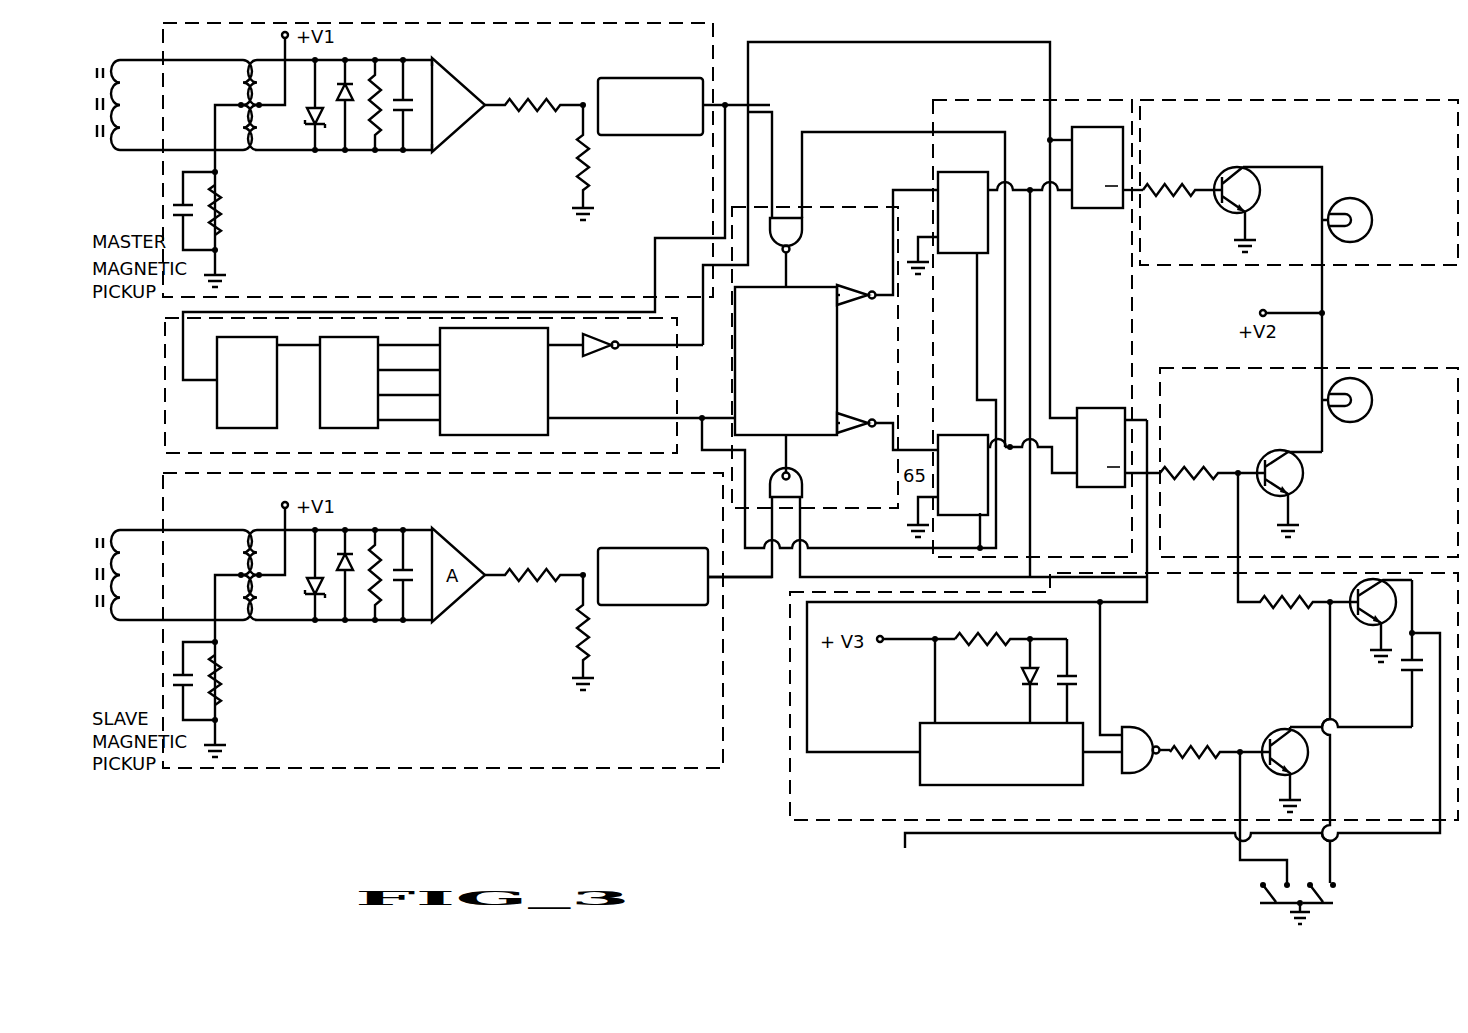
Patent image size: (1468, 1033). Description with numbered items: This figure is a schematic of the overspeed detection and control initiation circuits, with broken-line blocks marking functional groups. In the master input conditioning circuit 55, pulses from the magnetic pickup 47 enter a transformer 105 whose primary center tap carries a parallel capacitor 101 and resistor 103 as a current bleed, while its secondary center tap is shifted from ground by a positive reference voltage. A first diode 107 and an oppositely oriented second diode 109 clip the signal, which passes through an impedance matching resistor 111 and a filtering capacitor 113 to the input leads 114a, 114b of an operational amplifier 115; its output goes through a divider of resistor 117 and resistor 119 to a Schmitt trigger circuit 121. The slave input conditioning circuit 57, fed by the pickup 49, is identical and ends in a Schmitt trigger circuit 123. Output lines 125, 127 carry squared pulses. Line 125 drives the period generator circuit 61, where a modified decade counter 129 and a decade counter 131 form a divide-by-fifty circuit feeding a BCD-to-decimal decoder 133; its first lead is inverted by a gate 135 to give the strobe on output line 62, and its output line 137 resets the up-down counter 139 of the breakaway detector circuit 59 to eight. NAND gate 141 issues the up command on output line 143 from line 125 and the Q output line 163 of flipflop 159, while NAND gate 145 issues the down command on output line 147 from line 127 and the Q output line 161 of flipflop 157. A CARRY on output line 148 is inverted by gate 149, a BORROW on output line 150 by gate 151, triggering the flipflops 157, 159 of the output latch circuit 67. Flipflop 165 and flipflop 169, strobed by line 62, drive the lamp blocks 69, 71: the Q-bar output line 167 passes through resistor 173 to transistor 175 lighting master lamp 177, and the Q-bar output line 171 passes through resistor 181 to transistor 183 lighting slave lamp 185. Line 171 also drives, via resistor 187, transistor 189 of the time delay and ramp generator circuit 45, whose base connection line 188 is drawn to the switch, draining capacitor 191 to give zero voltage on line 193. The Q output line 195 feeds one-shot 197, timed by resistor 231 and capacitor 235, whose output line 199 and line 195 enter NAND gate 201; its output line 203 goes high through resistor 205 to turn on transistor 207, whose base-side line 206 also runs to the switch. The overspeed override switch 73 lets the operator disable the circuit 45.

The time delay and ramp generator circuit 45 is at (790, 822).
The magnetic pickup 47 is at (118, 60).
The magnetic pickup 49 is at (116, 562).
The input conditioning circuit 55 is at (713, 32).
The input conditioning circuit 57 is at (683, 782).
The breakaway detector circuit 59 is at (848, 207).
The period generator circuit 61 is at (165, 362).
The output line 62 is at (665, 344).
The output latch circuit 67 is at (1068, 100).
The master vehicle overspeed light and drive means 69 is at (1322, 100).
The slave vehicle overspeed light and drive means 71 is at (1390, 367).
The overspeed override switch 73 is at (1334, 905).
The capacitor 101 is at (174, 206).
The resistor 103 is at (226, 202).
The transformer 105 is at (246, 60).
The first diode 107 is at (312, 124).
The second diode 109 is at (350, 104).
The impedance matching resistor 111 is at (378, 86).
The filtering capacitor 113 is at (402, 126).
The input lead 114a is at (432, 64).
The input lead 114b is at (433, 150).
The operational amplifier 115 is at (456, 84).
The resistor 117 is at (528, 104).
The resistor 119 is at (575, 166).
The Schmitt trigger circuit 121 is at (678, 78).
The Schmitt trigger circuit 123 is at (653, 560).
The output line 125 is at (770, 105).
The output line 127 is at (742, 595).
The modified decade counter 129 is at (217, 418).
The decade counter 131 is at (320, 422).
The BCD-to-decimal decoder 133 is at (440, 432).
The gate 135 is at (625, 359).
The output line 137 is at (604, 418).
The up-down counter 139 is at (837, 353).
The NAND gate 141 is at (804, 219).
The output line 143 is at (788, 262).
The NAND gate 145 is at (806, 488).
The output line 147 is at (790, 467).
The output line 148 is at (844, 290).
The gate 149 is at (852, 310).
The output line 150 is at (825, 442).
The gate 151 is at (856, 420).
The information storage flipflop 157 is at (968, 162).
The information storage flipflop 159 is at (963, 426).
The Q output line 161 is at (1021, 185).
The Q output line 163 is at (916, 188).
The flipflop 165 is at (1108, 210).
The Q-bar output line 167 is at (1142, 193).
The flipflop 169 is at (1094, 408).
The Q-bar output line 171 is at (1150, 476).
The resistor 173 is at (1170, 184).
The transistor 175 is at (1230, 166).
The master vehicle overspeed indicator lamp 177 is at (1372, 221).
The resistor 181 is at (1202, 465).
The transistor 183 is at (1275, 446).
The slave overspeed indicator lamp 185 is at (1372, 393).
The resistor 187 is at (1288, 608).
The switch line 188 is at (1328, 673).
The transistor 189 is at (1348, 589).
The capacitor 191 is at (1407, 670).
The line 193 is at (1440, 745).
The Q output line 195 is at (1147, 602).
The one-shot 197 is at (920, 776).
The output line 199 is at (1106, 756).
The NAND gate 201 is at (1140, 716).
The output line 203 is at (1161, 745).
The resistor 205 is at (1199, 759).
The emitter line 206 is at (1238, 804).
The transistor 207 is at (1266, 738).
The resistor 231 is at (1001, 642).
The capacitor 235 is at (1078, 673).